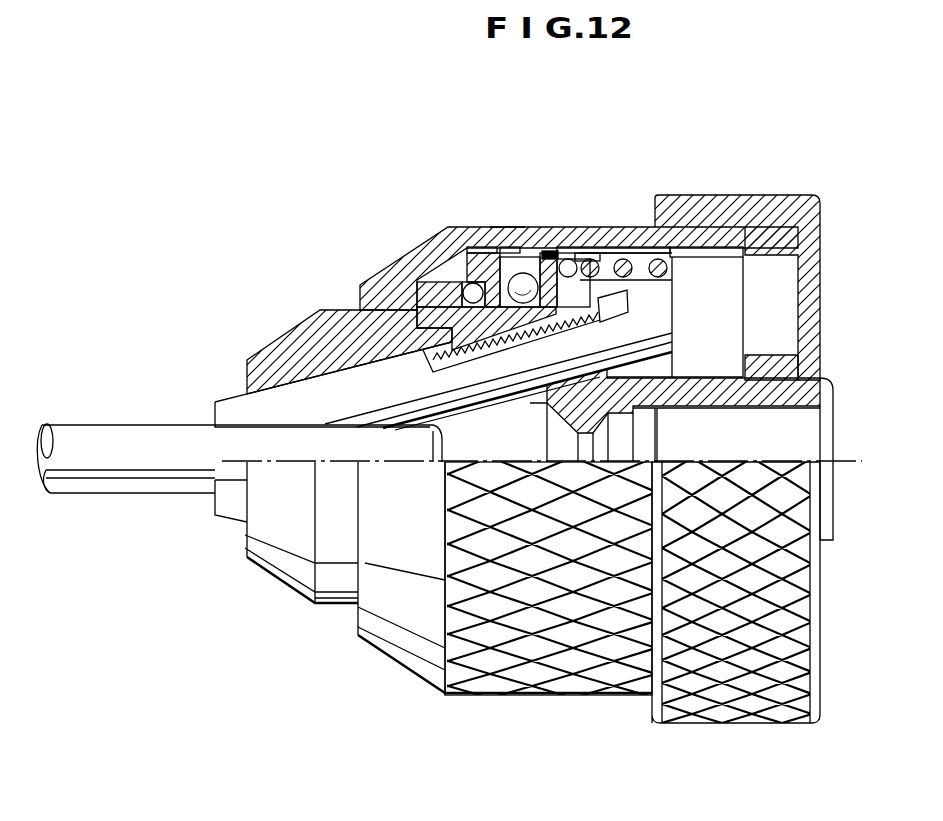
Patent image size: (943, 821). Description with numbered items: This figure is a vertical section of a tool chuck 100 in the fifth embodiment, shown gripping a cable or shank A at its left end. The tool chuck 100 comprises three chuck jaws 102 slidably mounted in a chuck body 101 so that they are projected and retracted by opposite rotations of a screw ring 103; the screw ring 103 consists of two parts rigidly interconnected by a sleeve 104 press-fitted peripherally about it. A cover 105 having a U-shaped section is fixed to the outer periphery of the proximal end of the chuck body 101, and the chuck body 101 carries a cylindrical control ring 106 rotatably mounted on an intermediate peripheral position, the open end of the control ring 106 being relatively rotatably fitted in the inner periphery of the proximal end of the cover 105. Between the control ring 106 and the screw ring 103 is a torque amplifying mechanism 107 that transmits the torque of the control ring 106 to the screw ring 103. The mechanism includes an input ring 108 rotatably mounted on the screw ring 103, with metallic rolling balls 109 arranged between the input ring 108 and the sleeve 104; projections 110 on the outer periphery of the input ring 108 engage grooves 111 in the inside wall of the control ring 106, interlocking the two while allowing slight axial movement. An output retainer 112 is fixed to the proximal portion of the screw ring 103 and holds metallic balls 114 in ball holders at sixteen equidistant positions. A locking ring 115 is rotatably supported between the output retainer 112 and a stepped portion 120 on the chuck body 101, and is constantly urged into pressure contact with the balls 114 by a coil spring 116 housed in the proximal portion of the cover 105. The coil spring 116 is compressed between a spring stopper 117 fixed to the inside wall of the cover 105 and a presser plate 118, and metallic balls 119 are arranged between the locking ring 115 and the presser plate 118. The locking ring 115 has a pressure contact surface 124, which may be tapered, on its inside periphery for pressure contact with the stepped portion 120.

The tool chuck 100 is at (288, 212).
The cable A is at (117, 447).
The chuck body 101 is at (273, 346).
The chuck jaws 102 is at (340, 387).
The screw ring 103 is at (417, 297).
The sleeve 104 is at (435, 287).
The cover 105 is at (735, 188).
The control ring 106 is at (612, 216).
The torque amplifying mechanism 107 is at (507, 212).
The input ring 108 is at (477, 268).
The rolling balls 109 is at (432, 278).
The projections 110 is at (487, 250).
The grooves 111 is at (637, 250).
The output retainer 112 is at (523, 273).
The metallic ball 114 is at (541, 262).
The locking ring 115 is at (560, 262).
The coil spring 116 is at (670, 250).
The spring stopper 117 is at (710, 262).
The presser plate 118 is at (628, 294).
The metallic balls 119 is at (585, 257).
The stepped portion 120 is at (674, 342).
The pressure contact surface 124 is at (508, 370).